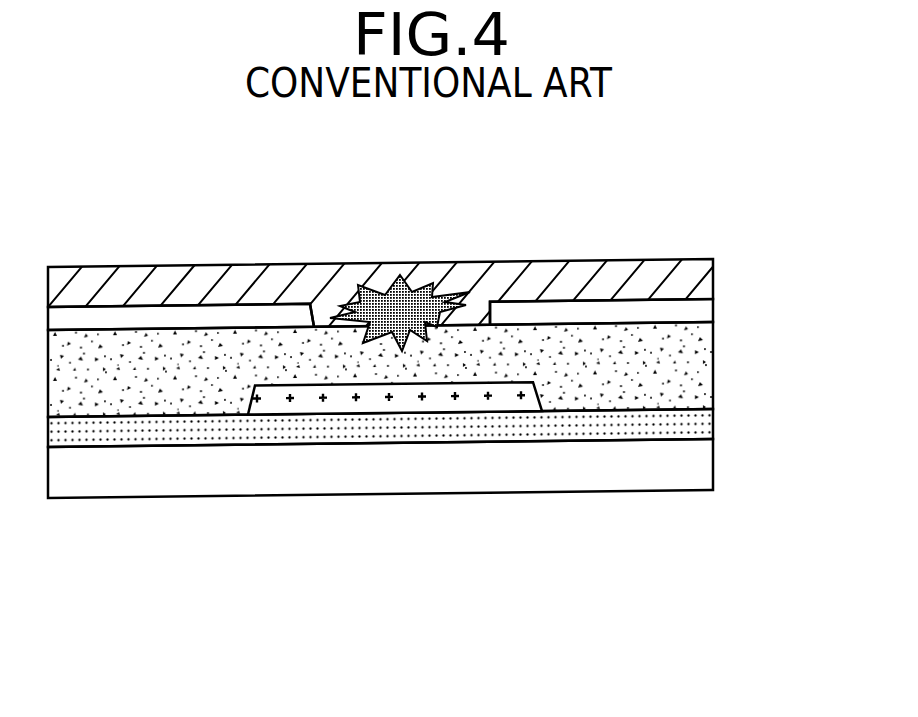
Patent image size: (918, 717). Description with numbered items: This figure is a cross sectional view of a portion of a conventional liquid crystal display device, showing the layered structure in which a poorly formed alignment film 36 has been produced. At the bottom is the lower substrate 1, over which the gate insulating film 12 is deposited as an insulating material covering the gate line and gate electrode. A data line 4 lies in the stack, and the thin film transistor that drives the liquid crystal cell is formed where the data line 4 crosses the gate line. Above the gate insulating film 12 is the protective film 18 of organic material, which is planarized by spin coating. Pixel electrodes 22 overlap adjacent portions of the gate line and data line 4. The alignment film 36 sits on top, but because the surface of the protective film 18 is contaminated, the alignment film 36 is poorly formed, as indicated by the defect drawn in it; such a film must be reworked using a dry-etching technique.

The lower substrate 1 is at (700, 462).
The gate insulating film 12 is at (698, 422).
The data line 4 is at (460, 397).
The protective film 18 is at (698, 376).
The pixel electrodes 22 is at (695, 310).
The alignment film 36 is at (695, 265).